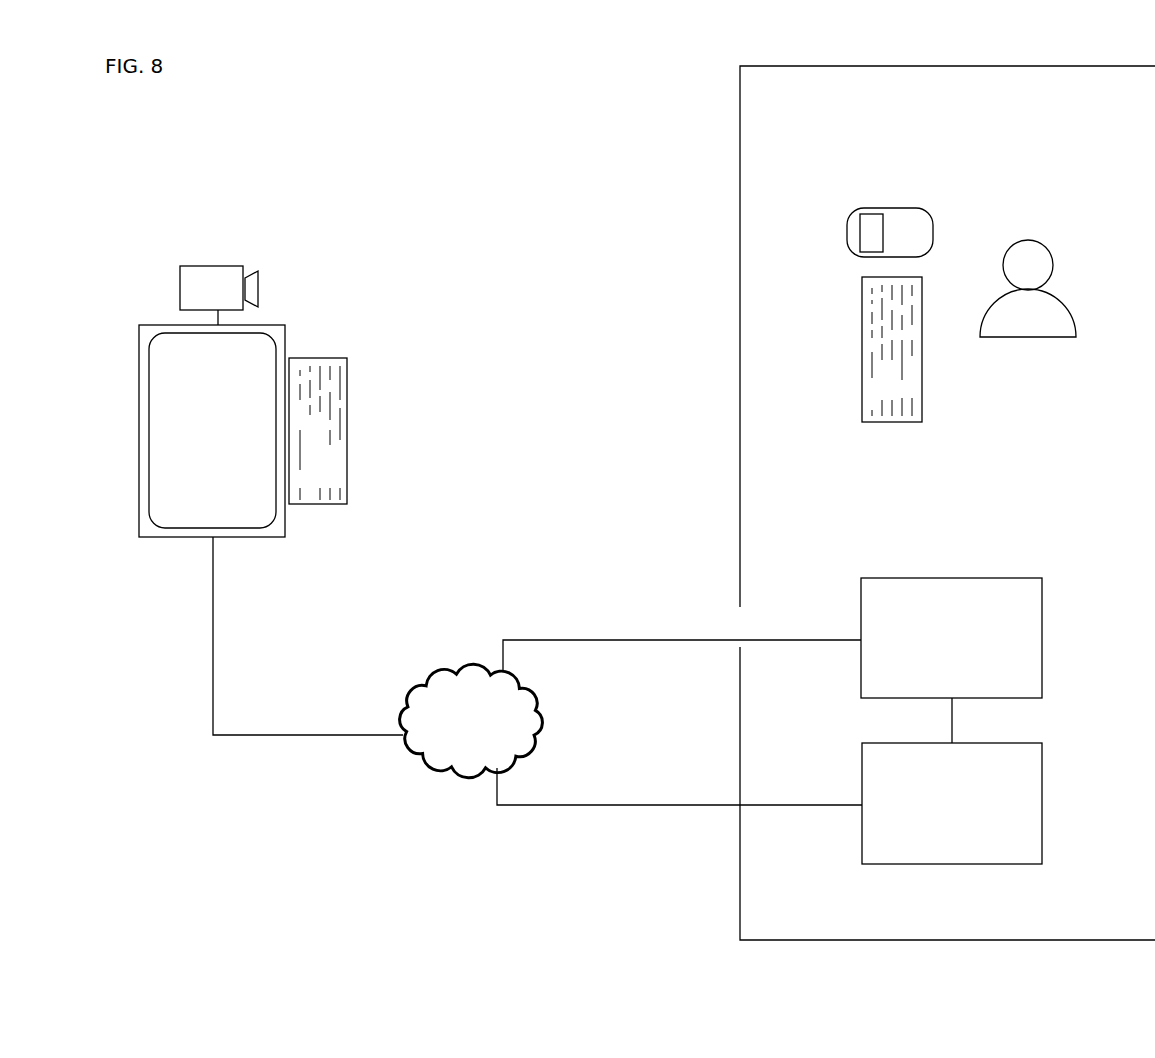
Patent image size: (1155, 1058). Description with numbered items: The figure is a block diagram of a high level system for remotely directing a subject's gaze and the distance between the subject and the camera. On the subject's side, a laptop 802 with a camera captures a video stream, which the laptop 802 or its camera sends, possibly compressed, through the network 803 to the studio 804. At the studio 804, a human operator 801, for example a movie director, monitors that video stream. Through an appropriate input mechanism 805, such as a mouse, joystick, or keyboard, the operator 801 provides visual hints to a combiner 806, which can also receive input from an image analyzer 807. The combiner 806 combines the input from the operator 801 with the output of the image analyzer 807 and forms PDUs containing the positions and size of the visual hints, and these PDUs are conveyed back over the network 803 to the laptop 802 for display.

The human operator 801 is at (1032, 240).
The laptop 802 is at (253, 538).
The network 803 is at (455, 773).
The studio 804 is at (740, 503).
The input mechanism 805 is at (860, 353).
The combiner 806 is at (1043, 642).
The image analyzer 807 is at (1043, 803).